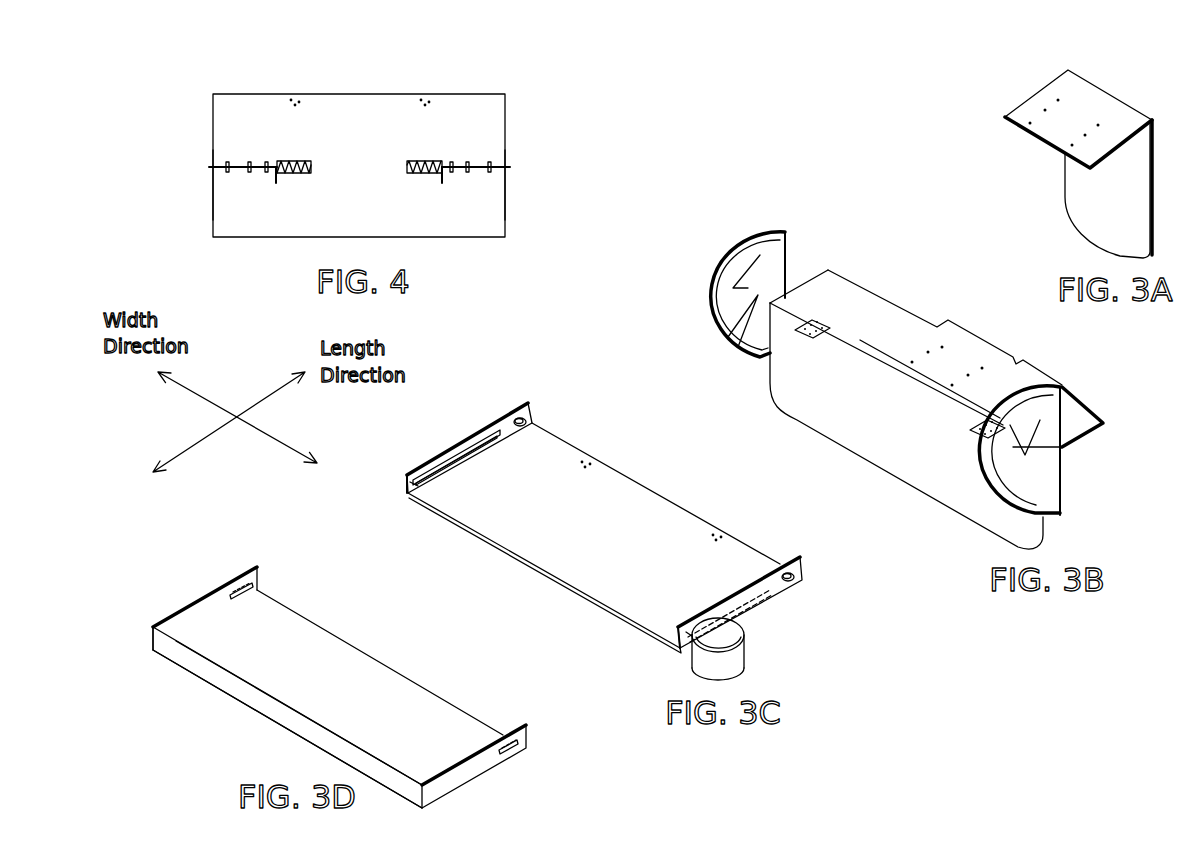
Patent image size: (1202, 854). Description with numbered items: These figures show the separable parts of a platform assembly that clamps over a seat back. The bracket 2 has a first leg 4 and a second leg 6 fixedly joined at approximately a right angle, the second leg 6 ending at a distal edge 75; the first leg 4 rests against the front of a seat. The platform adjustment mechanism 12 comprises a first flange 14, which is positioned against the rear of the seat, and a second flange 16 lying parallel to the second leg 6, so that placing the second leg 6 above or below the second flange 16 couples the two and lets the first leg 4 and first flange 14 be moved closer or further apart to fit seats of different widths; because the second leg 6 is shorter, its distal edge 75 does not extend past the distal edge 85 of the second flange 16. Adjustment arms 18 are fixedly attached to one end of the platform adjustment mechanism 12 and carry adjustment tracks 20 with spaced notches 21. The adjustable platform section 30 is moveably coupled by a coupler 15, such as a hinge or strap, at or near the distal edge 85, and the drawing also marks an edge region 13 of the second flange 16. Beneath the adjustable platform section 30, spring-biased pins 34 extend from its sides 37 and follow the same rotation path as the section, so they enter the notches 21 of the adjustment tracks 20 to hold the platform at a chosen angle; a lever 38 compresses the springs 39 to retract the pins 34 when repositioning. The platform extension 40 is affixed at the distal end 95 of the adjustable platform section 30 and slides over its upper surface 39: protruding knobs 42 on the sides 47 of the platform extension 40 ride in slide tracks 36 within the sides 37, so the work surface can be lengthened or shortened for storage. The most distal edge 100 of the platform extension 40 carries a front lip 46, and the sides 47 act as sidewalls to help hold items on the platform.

In FIG. 3A, the bracket 2 is at (1046, 139).
In FIG. 3A, the first leg 4 is at (1078, 188).
In FIG. 3A, the second leg 6 is at (1082, 95).
In FIG. 3A, the distal edge 75 is at (1017, 127).
In FIG. 3B, the platform adjustment mechanism 12 is at (885, 358).
In FIG. 3B, the rear edge 13 is at (978, 332).
In FIG. 3B, the first flange 14 is at (810, 410).
In FIG. 3B, the coupler 15 is at (820, 320).
In FIG. 3B, the second flange 16 is at (895, 317).
In FIG. 3B, the adjustment arm 18 is at (778, 232).
In FIG. 3B, the adjustment track 20 is at (717, 330).
In FIG. 3B, the notch 21 is at (758, 295).
In FIG. 3B, the distal edge 85 is at (917, 390).
In FIG. 3C, the adjustable platform section 30 is at (601, 503).
In FIG. 4, the spring-biased pin 34 is at (240, 163).
In FIG. 3C, the spring-biased pin 34 is at (748, 614).
In FIG. 3C, the slide track 36 is at (422, 463).
In FIG. 4, the side 37 is at (215, 198).
In FIG. 3C, the side 37 is at (448, 450).
In FIG. 4, the lever 38 is at (276, 182).
In FIG. 4, the spring 39 is at (293, 162).
In FIG. 3C, the spring 39 is at (603, 508).
In FIG. 3C, the side 47 is at (468, 435).
In FIG. 3D, the side 47 is at (453, 778).
In FIG. 4, the distal end 95 is at (437, 237).
In FIG. 3C, the distal end 95 is at (523, 563).
In FIG. 3D, the platform extension 40 is at (327, 684).
In FIG. 3D, the protruding knob 42 is at (237, 592).
In FIG. 3D, the front lip 46 is at (302, 732).
In FIG. 3D, the distal edge 100 is at (245, 710).